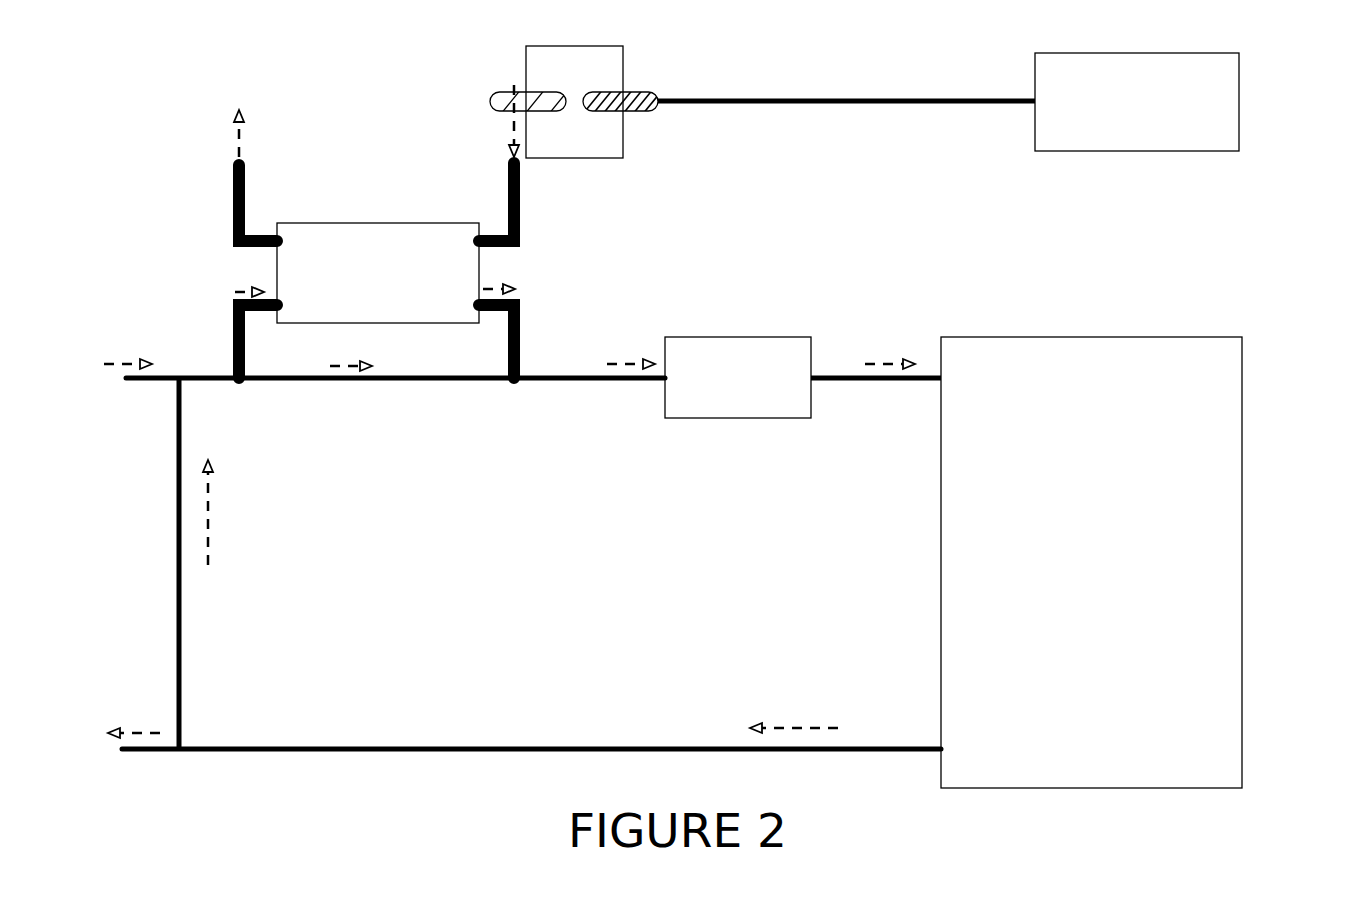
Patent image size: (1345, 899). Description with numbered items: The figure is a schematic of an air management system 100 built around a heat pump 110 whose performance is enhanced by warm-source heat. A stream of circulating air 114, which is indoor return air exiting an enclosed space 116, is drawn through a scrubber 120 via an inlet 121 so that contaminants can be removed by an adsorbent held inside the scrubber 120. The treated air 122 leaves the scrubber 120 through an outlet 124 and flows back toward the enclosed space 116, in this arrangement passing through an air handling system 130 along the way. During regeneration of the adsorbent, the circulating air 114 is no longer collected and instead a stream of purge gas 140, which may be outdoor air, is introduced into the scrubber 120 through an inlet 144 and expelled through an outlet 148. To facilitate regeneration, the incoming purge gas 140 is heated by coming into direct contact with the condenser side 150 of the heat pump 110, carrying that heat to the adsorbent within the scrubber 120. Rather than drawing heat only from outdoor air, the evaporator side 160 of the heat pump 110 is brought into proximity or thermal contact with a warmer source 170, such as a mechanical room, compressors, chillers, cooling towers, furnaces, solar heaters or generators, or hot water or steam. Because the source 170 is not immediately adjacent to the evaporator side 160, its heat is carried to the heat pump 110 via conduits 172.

The air management system 100 is at (1288, 128).
The heat pump 110 is at (569, 158).
The circulating air 114 is at (246, 291).
The enclosed space 116 is at (1013, 337).
The scrubber 120 is at (342, 223).
The inlet 121 is at (233, 330).
The treated air 122 is at (496, 288).
The outlet 124 is at (521, 357).
The air handling system 130 is at (758, 337).
The purge gas 140 is at (512, 124).
The inlet 144 is at (520, 236).
The outlet 148 is at (233, 203).
The condenser side 150 is at (490, 97).
The evaporator side 160 is at (650, 113).
The source 170 is at (1167, 152).
The conduits 172 is at (895, 104).